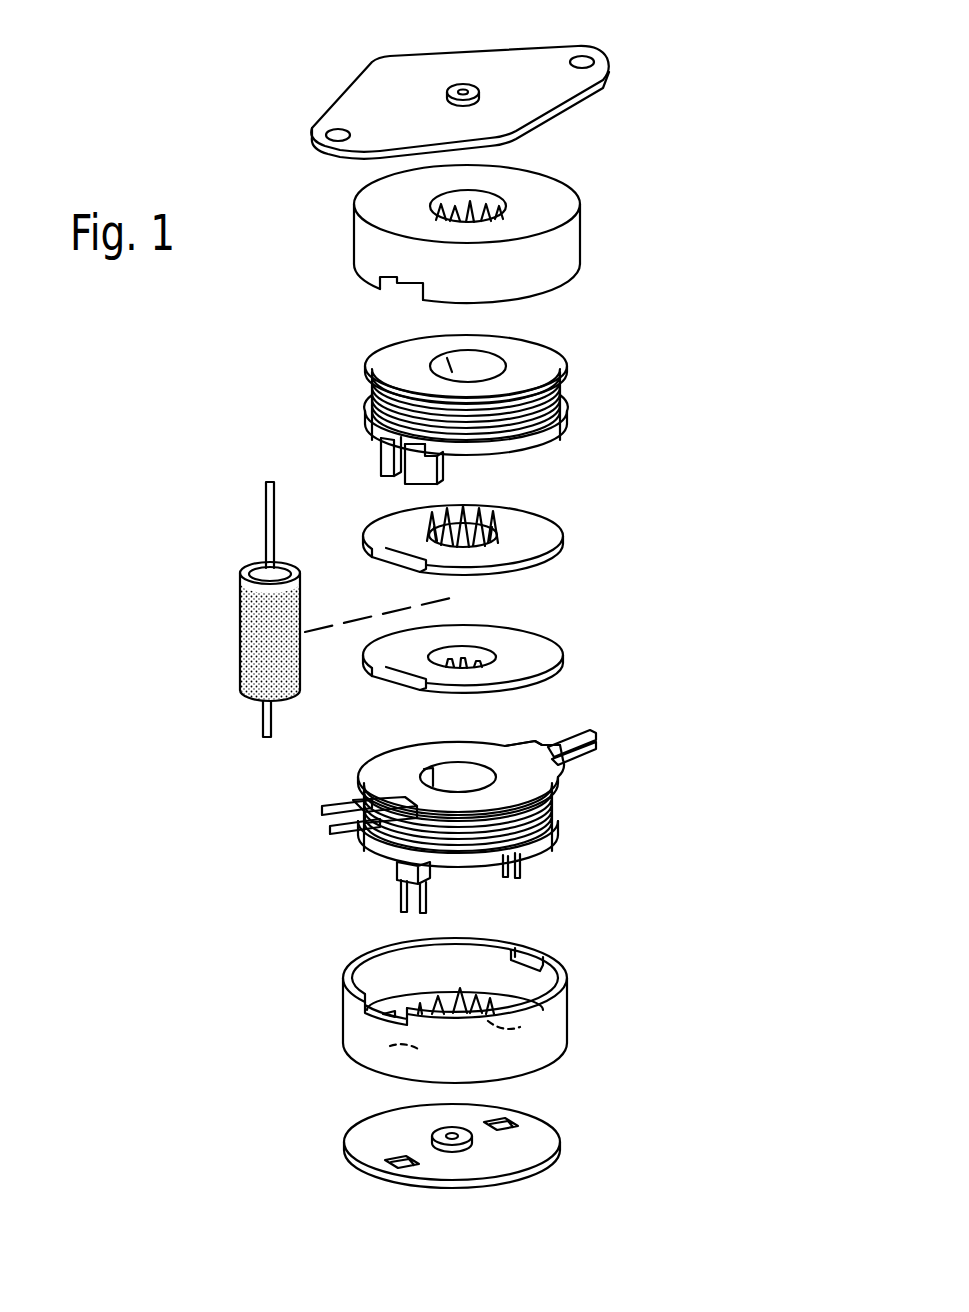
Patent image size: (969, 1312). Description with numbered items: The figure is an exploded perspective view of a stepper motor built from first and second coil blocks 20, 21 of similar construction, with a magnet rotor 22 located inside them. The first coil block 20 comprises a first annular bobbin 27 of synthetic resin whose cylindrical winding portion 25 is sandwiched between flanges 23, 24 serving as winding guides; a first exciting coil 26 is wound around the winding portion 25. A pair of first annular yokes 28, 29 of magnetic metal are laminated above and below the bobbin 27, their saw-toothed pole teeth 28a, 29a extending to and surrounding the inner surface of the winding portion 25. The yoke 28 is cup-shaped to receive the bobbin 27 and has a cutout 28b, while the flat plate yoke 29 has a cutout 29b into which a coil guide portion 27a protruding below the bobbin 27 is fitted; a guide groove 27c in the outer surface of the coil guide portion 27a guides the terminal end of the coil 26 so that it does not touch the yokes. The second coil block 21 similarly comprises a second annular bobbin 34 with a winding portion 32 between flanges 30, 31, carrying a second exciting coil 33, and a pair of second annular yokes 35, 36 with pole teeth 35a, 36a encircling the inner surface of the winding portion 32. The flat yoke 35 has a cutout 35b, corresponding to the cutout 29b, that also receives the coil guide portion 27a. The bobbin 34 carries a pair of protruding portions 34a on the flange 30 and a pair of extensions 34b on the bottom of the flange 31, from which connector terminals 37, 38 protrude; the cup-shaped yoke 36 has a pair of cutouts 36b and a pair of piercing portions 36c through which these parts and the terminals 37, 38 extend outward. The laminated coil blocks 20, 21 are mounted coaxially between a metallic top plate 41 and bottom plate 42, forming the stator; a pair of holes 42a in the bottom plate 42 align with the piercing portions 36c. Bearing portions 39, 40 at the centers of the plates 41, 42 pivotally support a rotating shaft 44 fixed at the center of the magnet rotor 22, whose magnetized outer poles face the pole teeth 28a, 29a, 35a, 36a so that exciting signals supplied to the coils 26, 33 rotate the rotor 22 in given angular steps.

The first coil block 20 is at (689, 379).
The second coil block 21 is at (660, 900).
The magnet rotor 22 is at (226, 572).
The flange 23 is at (550, 363).
The flange 24 is at (540, 450).
The cylindrical winding portion 25 is at (449, 367).
The first exciting coil 26 is at (387, 416).
The first annular bobbin 27 is at (580, 415).
The coil guide portion 27a is at (380, 460).
The guide groove 27c is at (410, 463).
The first annular yoke 28 is at (563, 263).
The pole teeth 28a is at (477, 205).
The cutout 28b is at (402, 294).
The first annular yoke 29 is at (550, 537).
The pole teeth 29a is at (478, 527).
The cutout 29b is at (395, 563).
The flange 30 is at (537, 783).
The flange 31 is at (543, 853).
The cylindrical winding portion 32 is at (430, 773).
The second exciting coil 33 is at (377, 850).
The second annular bobbin 34 is at (465, 875).
The protruding portions 34a is at (373, 802).
The extensions 34b is at (405, 873).
The second annular yoke 35 is at (550, 657).
The pole teeth 35a is at (475, 657).
The cutout 35b is at (395, 682).
The second annular yoke 36 is at (548, 1037).
The pole teeth 36a is at (477, 997).
The cutouts 36b is at (538, 963).
The piercing portions 36c is at (387, 1063).
The connector terminal 37 is at (318, 837).
The connector terminal 38 is at (609, 742).
The bearing portion 39 is at (450, 88).
The bearing portion 40 is at (453, 1146).
The top plate 41 is at (542, 67).
The bottom plate 42 is at (527, 1160).
The holes 42a is at (512, 1124).
The rotating shaft 44 is at (267, 513).